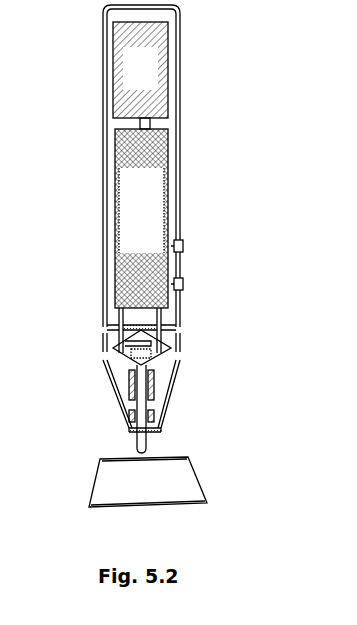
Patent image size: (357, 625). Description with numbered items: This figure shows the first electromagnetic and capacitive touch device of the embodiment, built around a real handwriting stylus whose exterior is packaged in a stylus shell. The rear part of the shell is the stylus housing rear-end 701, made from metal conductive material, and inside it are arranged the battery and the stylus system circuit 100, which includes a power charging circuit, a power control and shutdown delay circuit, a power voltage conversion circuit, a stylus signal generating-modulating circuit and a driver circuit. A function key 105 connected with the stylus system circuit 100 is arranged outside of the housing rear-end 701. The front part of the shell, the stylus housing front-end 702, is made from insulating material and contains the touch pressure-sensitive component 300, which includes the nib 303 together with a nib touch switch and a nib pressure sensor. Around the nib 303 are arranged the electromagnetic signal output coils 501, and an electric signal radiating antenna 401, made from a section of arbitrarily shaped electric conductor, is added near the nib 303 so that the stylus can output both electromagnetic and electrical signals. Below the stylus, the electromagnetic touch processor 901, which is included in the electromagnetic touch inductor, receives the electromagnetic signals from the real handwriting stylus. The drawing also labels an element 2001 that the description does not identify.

The electromagnetic signal output coils 501 is at (113, 58).
The stylus system circuit 100 is at (112, 139).
The stylus housing rear-end 701 is at (104, 229).
The function key 105 is at (185, 250).
The touch pressure-sensitive component 300 is at (112, 347).
The stylus housing front-end 702 is at (105, 376).
The electromagnetic touch processor 901 is at (130, 388).
The electric signal radiating antenna 401 is at (132, 418).
The nib 303 is at (140, 444).
The base pad 2001 is at (181, 464).